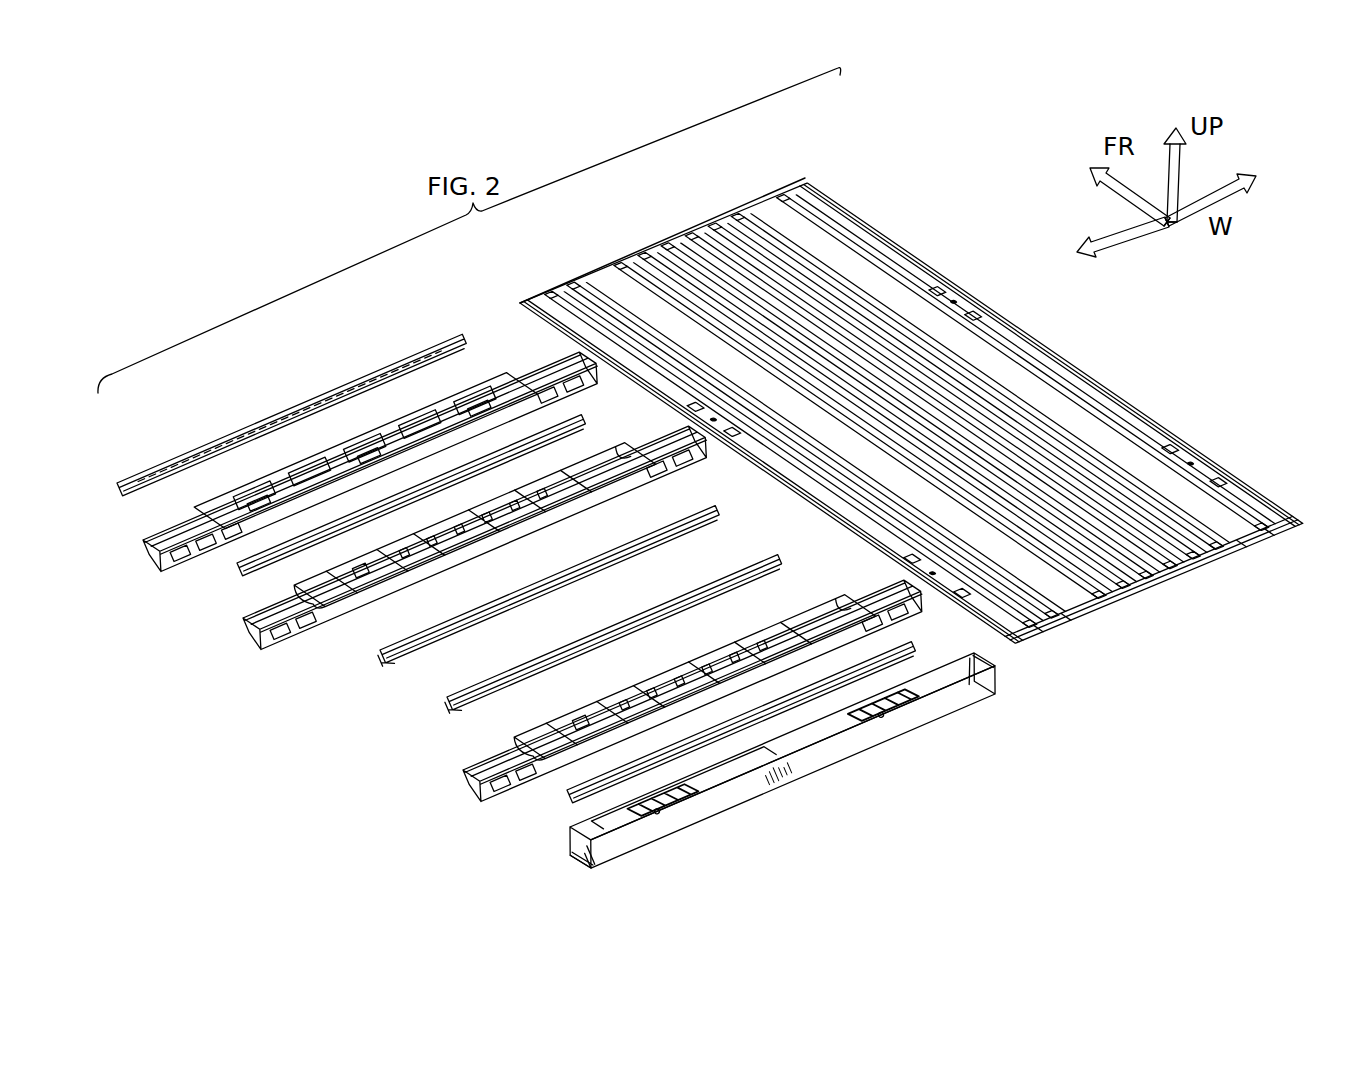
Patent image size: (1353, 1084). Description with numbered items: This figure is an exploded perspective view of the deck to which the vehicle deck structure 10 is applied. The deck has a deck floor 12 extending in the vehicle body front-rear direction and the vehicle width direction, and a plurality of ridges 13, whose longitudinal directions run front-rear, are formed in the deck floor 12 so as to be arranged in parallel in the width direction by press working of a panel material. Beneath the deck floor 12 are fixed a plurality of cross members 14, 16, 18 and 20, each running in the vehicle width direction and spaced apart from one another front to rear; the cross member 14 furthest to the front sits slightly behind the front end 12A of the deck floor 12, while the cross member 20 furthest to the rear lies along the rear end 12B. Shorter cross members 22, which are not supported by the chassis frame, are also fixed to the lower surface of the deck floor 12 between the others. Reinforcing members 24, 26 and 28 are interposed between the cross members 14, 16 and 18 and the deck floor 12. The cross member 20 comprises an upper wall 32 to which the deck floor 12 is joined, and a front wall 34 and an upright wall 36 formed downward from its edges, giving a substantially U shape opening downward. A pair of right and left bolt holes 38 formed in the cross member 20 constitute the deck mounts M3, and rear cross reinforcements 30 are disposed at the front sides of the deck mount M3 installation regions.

The vehicle deck structure 10 is at (898, 127).
The deck floor 12 is at (911, 415).
The front end 12A is at (747, 200).
The rear end 12B is at (1153, 579).
The ridges 13 is at (910, 409).
The cross member 14 is at (176, 562).
The cross member 16 is at (294, 626).
The cross member 18 is at (516, 783).
The cross member 20 is at (782, 777).
The cross members 22 is at (293, 398).
The reinforcing member 24 is at (286, 456).
The reinforcing member 26 is at (398, 524).
The reinforcing member 28 is at (588, 688).
The rear cross reinforcement 30 is at (772, 752).
The upper wall 32 is at (793, 753).
The front wall 34 is at (582, 860).
The upright wall 36 is at (778, 773).
The bolt holes 38 is at (769, 763).
The deck mount M3 is at (655, 806).